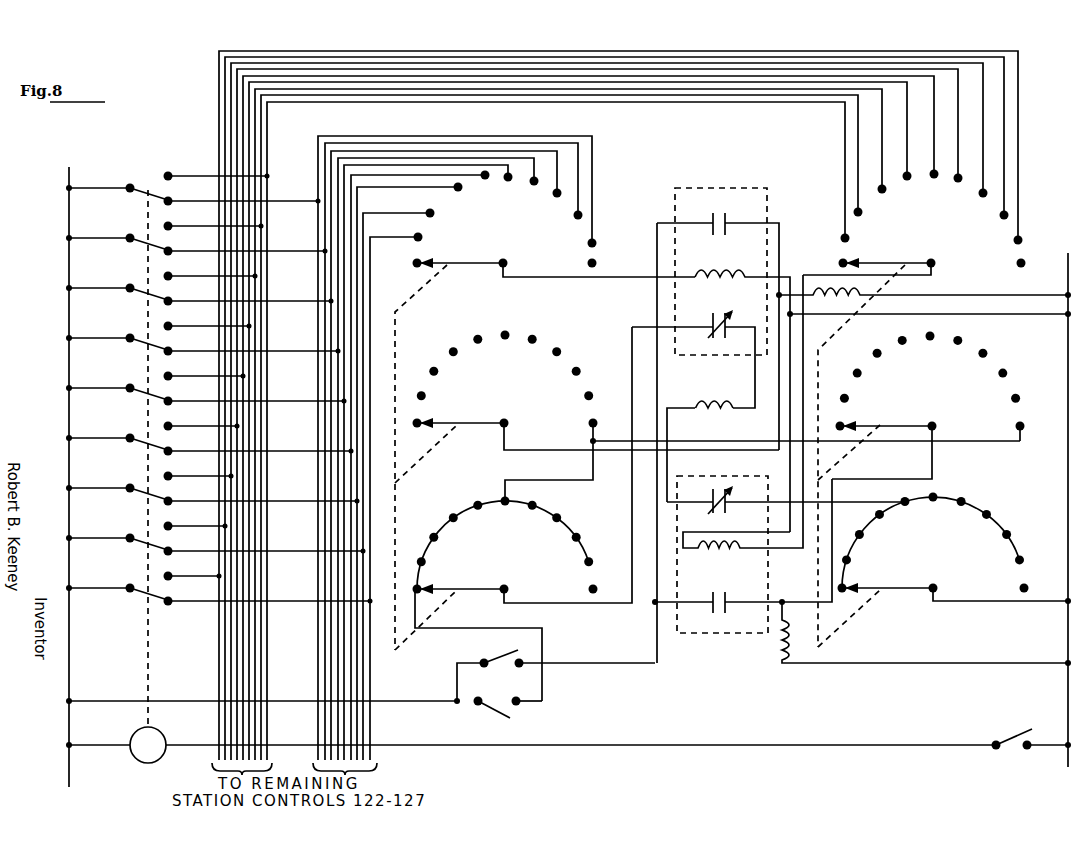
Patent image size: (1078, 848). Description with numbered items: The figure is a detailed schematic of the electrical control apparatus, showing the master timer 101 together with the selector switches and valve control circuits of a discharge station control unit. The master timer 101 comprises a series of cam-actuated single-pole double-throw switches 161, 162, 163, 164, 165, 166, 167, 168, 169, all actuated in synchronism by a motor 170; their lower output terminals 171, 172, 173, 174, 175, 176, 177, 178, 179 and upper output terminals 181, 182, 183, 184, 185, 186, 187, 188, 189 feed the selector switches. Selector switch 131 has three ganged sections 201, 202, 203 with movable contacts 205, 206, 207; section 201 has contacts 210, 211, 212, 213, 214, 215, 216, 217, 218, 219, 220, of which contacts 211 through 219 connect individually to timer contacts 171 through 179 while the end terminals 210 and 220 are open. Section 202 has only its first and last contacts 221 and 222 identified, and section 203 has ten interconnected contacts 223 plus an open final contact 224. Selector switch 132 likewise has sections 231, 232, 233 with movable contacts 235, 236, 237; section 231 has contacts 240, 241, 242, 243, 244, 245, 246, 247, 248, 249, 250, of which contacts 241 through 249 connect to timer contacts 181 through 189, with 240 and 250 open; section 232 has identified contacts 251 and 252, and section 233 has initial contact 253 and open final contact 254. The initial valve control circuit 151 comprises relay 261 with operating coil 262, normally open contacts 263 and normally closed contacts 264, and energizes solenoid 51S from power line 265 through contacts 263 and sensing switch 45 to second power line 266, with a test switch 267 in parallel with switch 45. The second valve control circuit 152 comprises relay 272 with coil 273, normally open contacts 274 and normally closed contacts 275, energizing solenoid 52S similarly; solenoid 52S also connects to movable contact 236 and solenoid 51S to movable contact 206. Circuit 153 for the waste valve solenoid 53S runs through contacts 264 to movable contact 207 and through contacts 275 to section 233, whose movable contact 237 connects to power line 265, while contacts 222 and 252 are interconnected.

The master timer 101 is at (134, 166).
The cam-actuated switch 169 is at (137, 196).
The cam-actuated switch 168 is at (117, 252).
The cam-actuated switch 167 is at (117, 302).
The cam-actuated switch 166 is at (117, 352).
The cam-actuated switch 165 is at (117, 402).
The cam-actuated switch 164 is at (117, 452).
The cam-actuated switch 163 is at (117, 502).
The cam-actuated switch 162 is at (117, 552).
The cam-actuated switch 161 is at (117, 602).
The upper output terminal 181 is at (166, 171).
The upper output terminal 182 is at (170, 230).
The upper output terminal 183 is at (170, 280).
The upper output terminal 184 is at (170, 330).
The upper output terminal 185 is at (170, 380).
The upper output terminal 186 is at (170, 430).
The upper output terminal 187 is at (170, 480).
The upper output terminal 188 is at (170, 530).
The upper output terminal 189 is at (170, 580).
The lower output terminal 179 is at (170, 205).
The lower output terminal 178 is at (170, 255).
The lower output terminal 177 is at (170, 305).
The lower output terminal 176 is at (170, 355).
The lower output terminal 175 is at (170, 405).
The lower output terminal 174 is at (170, 455).
The lower output terminal 173 is at (170, 505).
The lower output terminal 172 is at (170, 555).
The lower output terminal 171 is at (168, 606).
The motor 170 is at (136, 761).
The second power line 266 is at (70, 655).
The test switch 267 is at (497, 654).
The sensing switch 45 is at (511, 720).
The selector switch 131 is at (580, 620).
The selector switch 132 is at (958, 634).
The switch section 201 is at (508, 230).
The switch section 202 is at (717, 415).
The switch section 203 is at (505, 546).
The movable contact 205 is at (466, 265).
The movable contact 206 is at (460, 423).
The movable contact 207 is at (449, 589).
The initial contact 210 is at (416, 267).
The fixed contact 211 is at (421, 241).
The fixed contact 212 is at (433, 217).
The fixed contact 213 is at (458, 192).
The fixed contact 214 is at (484, 180).
The fixed contact 215 is at (508, 182).
The fixed contact 216 is at (534, 186).
The fixed contact 217 is at (557, 198).
The fixed contact 218 is at (578, 220).
The fixed contact 219 is at (594, 241).
The final contact 220 is at (594, 263).
The first contact 221 is at (419, 421).
The last contact 222 is at (593, 423).
The fixed contacts 223 is at (419, 587).
The final contact 224 is at (590, 588).
The switch section 231 is at (929, 226).
The switch section 232 is at (946, 387).
The switch section 233 is at (946, 543).
The movable contact 235 is at (877, 264).
The movable contact 236 is at (895, 425).
The movable contact 237 is at (900, 590).
The initial contact 240 is at (840, 260).
The fixed contact 241 is at (839, 237).
The fixed contact 242 is at (858, 216).
The fixed contact 243 is at (882, 192).
The fixed contact 244 is at (907, 178).
The fixed contact 245 is at (934, 177).
The fixed contact 246 is at (960, 179).
The fixed contact 247 is at (985, 195).
The fixed contact 248 is at (1006, 217).
The fixed contact 249 is at (1016, 243).
The final contact 250 is at (1019, 265).
The initial contact 251 is at (843, 422).
The final contact 252 is at (1040, 412).
The initial contact 253 is at (845, 585).
The final contact 254 is at (1027, 583).
The initial valve control circuit 151 is at (713, 402).
The second valve control circuit 152 is at (778, 493).
The third valve control circuit 153 is at (705, 406).
The first valve control relay 261 is at (688, 186).
The operating coil 262 is at (704, 272).
The normally open contacts 263 is at (721, 215).
The normally closed contacts 264 is at (710, 320).
The power line 265 is at (1065, 333).
The relay 272 is at (700, 634).
The operating coil 273 is at (701, 556).
The normally open contacts 274 is at (714, 613).
The normally closed contacts 275 is at (727, 486).
The operating solenoid 51S is at (848, 310).
The operating solenoid 52S is at (790, 666).
The operating solenoid 53S is at (704, 416).